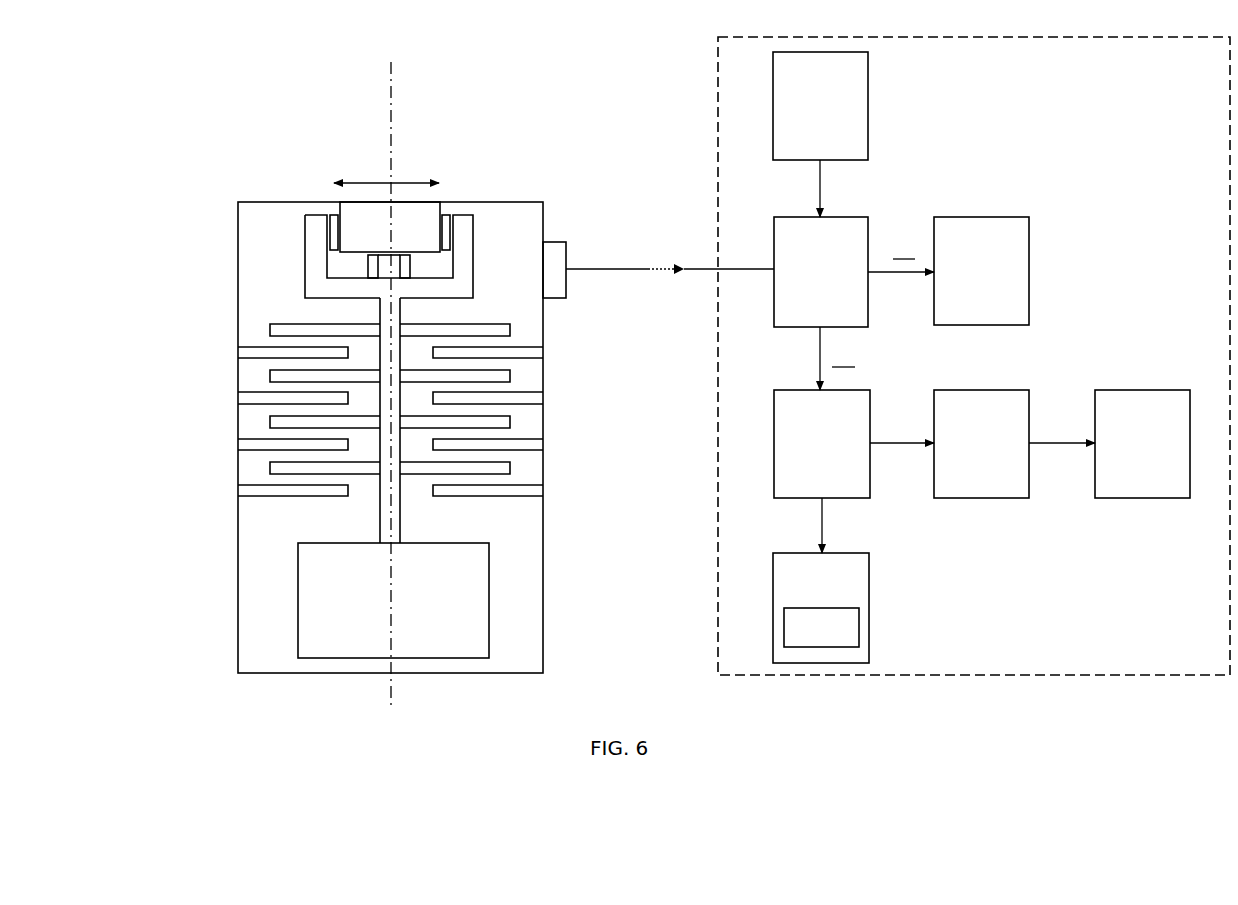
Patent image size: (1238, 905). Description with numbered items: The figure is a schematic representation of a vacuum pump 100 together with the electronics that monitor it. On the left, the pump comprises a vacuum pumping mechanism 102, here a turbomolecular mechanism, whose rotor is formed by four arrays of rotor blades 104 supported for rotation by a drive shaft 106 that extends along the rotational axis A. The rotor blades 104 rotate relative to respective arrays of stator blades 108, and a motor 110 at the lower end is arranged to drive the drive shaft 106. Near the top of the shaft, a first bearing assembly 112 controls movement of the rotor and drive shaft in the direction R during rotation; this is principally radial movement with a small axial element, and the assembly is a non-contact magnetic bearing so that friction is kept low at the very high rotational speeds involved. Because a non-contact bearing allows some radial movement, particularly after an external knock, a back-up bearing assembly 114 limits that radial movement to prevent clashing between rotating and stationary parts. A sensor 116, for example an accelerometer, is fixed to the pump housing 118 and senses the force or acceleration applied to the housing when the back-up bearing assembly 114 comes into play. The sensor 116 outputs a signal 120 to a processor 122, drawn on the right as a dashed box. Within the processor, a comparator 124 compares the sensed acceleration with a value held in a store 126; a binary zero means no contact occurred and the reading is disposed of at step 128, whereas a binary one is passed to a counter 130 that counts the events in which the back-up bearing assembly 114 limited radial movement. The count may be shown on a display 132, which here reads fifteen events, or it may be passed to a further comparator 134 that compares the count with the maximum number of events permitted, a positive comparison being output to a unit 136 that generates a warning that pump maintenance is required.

The vacuum pump 100 is at (172, 612).
The vacuum pumping mechanism 102 is at (218, 418).
The rotor blades 104 is at (270, 330).
The drive shaft 106 is at (402, 515).
The stator blades 108 is at (276, 491).
The motor 110 is at (366, 611).
The first bearing assembly 112 is at (322, 212).
The back-up bearing assembly 114 is at (372, 268).
The sensor 116 is at (560, 242).
The pump housing 118 is at (544, 325).
The signal 120 is at (657, 261).
The processor 122 is at (718, 187).
The comparator 124 is at (802, 278).
The store 126 is at (802, 114).
The step 128 is at (964, 278).
The counter 130 is at (804, 451).
The display 132 is at (803, 592).
The comparator 134 is at (964, 451).
The unit 136 is at (1124, 451).
The rotational axis A is at (392, 120).
The direction R is at (386, 171).